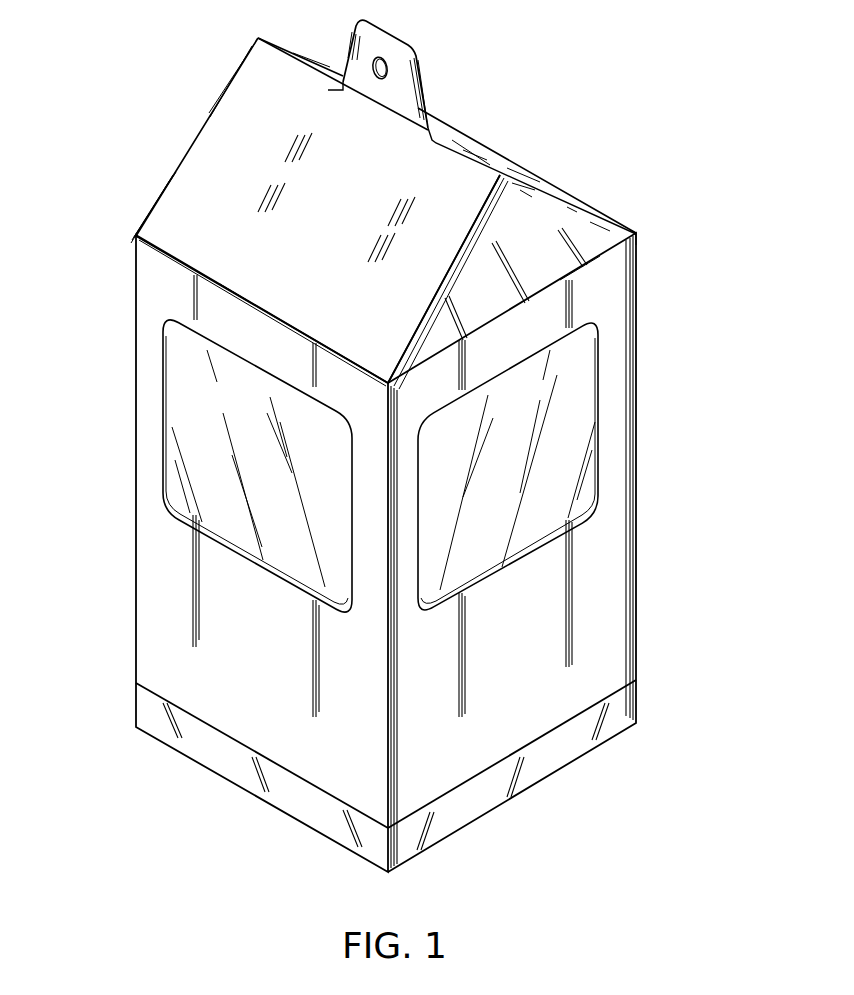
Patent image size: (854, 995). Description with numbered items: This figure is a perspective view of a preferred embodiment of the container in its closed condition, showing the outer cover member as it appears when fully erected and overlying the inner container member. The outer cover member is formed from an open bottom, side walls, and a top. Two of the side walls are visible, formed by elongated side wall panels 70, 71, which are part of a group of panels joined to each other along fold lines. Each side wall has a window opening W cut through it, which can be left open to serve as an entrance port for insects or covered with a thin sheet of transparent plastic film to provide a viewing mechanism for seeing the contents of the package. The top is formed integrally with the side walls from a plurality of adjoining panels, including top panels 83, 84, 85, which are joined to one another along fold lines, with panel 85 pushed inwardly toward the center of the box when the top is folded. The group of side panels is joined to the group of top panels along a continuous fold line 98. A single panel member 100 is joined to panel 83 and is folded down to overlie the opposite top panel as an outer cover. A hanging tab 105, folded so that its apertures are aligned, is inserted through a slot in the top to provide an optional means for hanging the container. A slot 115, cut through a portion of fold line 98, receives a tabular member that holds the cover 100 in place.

The side wall panel 70 is at (277, 688).
The side wall panel 71 is at (532, 678).
The window opening W is at (274, 487).
The single panel member 100 is at (352, 216).
The top panel 85 is at (538, 261).
The top panel 83 is at (447, 136).
The top panel 84 is at (640, 207).
The hanging tab 105 is at (429, 74).
The continuous fold line 98 is at (155, 250).
The slot 115 is at (233, 292).